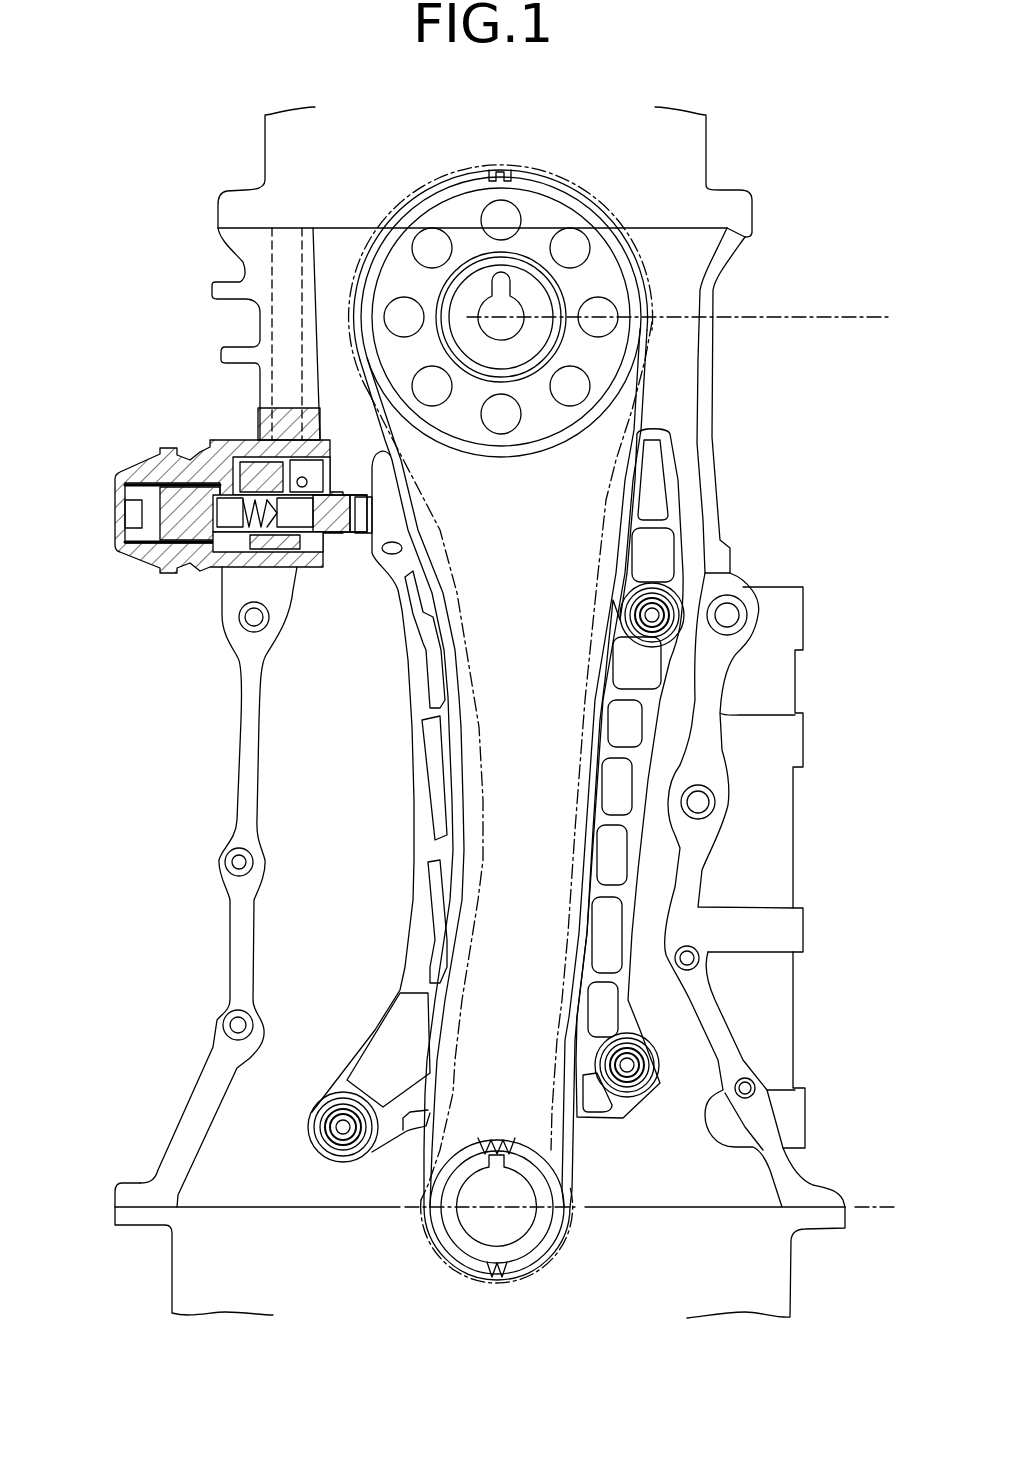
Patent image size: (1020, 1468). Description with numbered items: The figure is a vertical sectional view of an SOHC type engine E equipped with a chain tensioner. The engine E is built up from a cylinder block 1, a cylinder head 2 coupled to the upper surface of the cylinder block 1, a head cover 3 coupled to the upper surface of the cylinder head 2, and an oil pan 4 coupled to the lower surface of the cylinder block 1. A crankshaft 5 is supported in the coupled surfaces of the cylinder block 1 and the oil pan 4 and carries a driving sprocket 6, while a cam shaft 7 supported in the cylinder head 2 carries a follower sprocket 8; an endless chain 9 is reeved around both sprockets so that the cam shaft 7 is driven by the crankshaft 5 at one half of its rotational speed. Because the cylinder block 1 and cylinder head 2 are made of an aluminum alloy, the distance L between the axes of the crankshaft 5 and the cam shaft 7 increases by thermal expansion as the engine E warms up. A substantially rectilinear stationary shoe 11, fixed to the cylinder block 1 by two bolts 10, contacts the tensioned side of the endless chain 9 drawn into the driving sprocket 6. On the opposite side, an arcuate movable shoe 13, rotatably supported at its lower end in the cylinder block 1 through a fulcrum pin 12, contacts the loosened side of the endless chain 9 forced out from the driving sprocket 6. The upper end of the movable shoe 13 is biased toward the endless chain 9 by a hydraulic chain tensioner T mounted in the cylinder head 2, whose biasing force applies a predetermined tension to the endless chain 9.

The cylinder block 1 is at (235, 985).
The cylinder head 2 is at (257, 320).
The head cover 3 is at (302, 142).
The oil pan 4 is at (197, 1268).
The crankshaft 5 is at (477, 1220).
The driving sprocket 6 is at (493, 1140).
The cam shaft 7 is at (503, 330).
The follower sprocket 8 is at (500, 175).
The endless chain 9 is at (573, 1170).
The bolts 10 is at (652, 617).
The stationary shoe 11 is at (632, 797).
The fulcrum pin 12 is at (343, 1127).
The movable shoe 13 is at (417, 790).
The chain tensioner T is at (212, 587).
The engine E is at (223, 803).
The distance between axes L is at (876, 317).